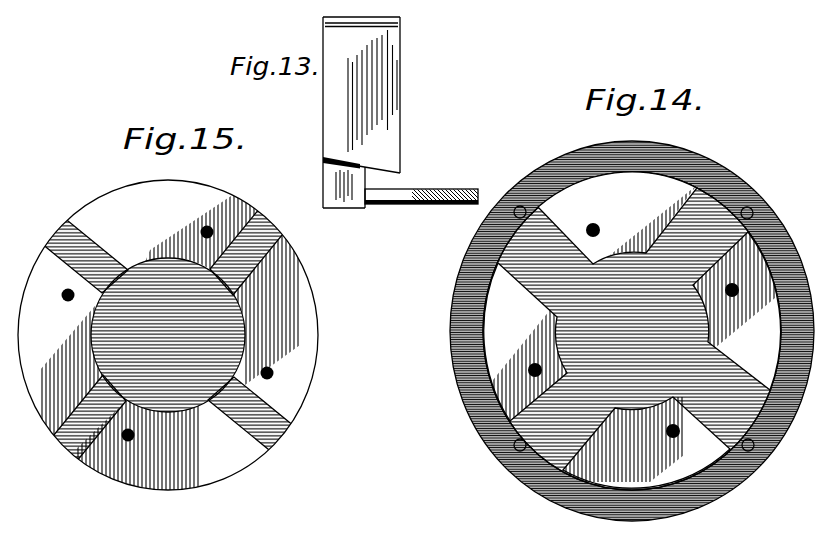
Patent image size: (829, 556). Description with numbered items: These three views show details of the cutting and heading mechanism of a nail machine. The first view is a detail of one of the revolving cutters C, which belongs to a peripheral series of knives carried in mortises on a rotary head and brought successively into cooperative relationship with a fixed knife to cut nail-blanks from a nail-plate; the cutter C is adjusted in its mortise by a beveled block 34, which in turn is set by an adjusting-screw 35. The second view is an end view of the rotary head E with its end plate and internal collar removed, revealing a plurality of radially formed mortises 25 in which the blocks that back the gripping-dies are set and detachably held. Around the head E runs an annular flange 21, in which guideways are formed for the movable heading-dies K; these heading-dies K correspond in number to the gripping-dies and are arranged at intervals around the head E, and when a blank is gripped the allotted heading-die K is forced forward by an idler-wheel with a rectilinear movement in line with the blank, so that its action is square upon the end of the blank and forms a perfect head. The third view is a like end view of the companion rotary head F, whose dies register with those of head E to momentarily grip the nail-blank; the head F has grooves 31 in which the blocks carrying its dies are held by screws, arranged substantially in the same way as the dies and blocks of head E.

In FIG. 13, the revolving cutter C is at (361, 112).
In FIG. 13, the block 34 is at (340, 172).
In FIG. 13, the adjusting-screw 35 is at (450, 196).
In FIG. 15, the rotary head F is at (168, 340).
In FIG. 15, the groove 31 is at (68, 219).
In FIG. 14, the rotary head E is at (450, 327).
In FIG. 14, the annular flange 21 is at (612, 503).
In FIG. 14, the mortise 25 is at (718, 209).
In FIG. 14, the heading-die K is at (517, 183).